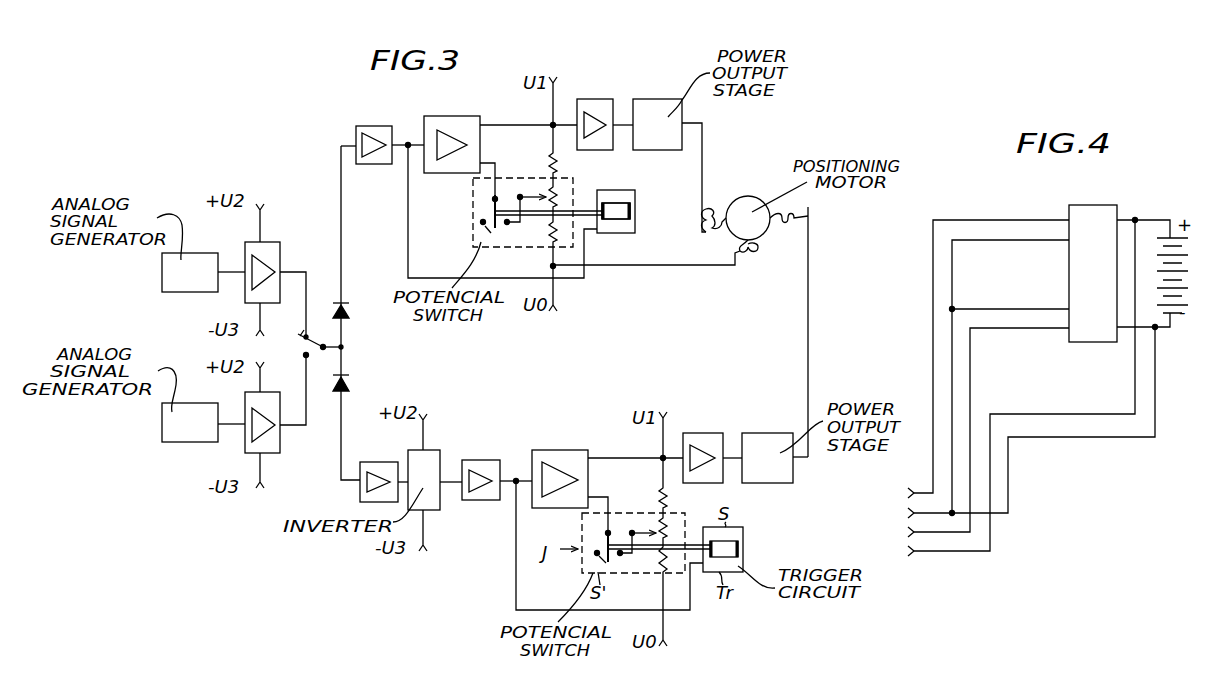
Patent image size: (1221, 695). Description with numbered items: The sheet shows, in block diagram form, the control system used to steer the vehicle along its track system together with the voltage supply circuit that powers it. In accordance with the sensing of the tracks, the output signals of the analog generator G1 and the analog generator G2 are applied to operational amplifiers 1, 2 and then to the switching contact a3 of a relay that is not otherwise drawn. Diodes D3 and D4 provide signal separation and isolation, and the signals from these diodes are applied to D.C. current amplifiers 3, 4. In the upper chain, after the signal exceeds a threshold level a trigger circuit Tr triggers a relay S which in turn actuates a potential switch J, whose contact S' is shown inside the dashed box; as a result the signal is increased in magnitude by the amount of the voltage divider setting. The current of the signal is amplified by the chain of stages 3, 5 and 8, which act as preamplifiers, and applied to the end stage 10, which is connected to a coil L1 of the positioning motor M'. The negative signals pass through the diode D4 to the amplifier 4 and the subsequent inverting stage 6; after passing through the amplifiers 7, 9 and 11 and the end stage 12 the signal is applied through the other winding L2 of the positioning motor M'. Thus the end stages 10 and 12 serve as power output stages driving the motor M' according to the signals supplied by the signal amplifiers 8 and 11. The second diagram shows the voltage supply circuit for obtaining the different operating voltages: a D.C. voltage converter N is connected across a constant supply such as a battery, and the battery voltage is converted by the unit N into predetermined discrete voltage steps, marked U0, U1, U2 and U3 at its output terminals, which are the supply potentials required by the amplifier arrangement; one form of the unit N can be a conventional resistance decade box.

In FIG. 3, the operational amplifier 1 is at (282, 245).
In FIG. 3, the operational amplifier 2 is at (281, 448).
In FIG. 3, the D.C. current amplifier 3 is at (381, 126).
In FIG. 3, the D.C. current amplifier 4 is at (378, 462).
In FIG. 3, the amplifying stage 5 is at (455, 116).
In FIG. 3, the inverting stage 6 is at (434, 450).
In FIG. 3, the amplifier 7 is at (481, 501).
In FIG. 3, the preamplifier 8 is at (597, 99).
In FIG. 3, the amplifier 9 is at (557, 450).
In FIG. 3, the end stage 10 is at (658, 99).
In FIG. 3, the amplifier 11 is at (710, 426).
In FIG. 3, the end stage 12 is at (768, 433).
In FIG. 3, the analog generator G1 is at (162, 272).
In FIG. 3, the analog generator G2 is at (162, 424).
In FIG. 3, the switching contact a3 is at (308, 357).
In FIG. 3, the diode D3 is at (350, 311).
In FIG. 3, the diode D4 is at (350, 381).
In FIG. 3, the potential switch J is at (470, 209).
In FIG. 3, the switch contact S' is at (543, 243).
In FIG. 3, the relay S is at (616, 200).
In FIG. 3, the trigger circuit Tr is at (613, 233).
In FIG. 3, the coil L1 is at (704, 219).
In FIG. 3, the winding L2 is at (808, 216).
In FIG. 3, the positioning motor M' is at (748, 203).
In FIG. 4, the D.C. voltage converter N is at (1100, 280).
In FIG. 4, the supply voltage U0 is at (1014, 381).
In FIG. 4, the supply voltage U1 is at (1004, 390).
In FIG. 4, the supply voltage + U2 is at (962, 361).
In FIG. 4, the supply voltage - U3 is at (962, 434).